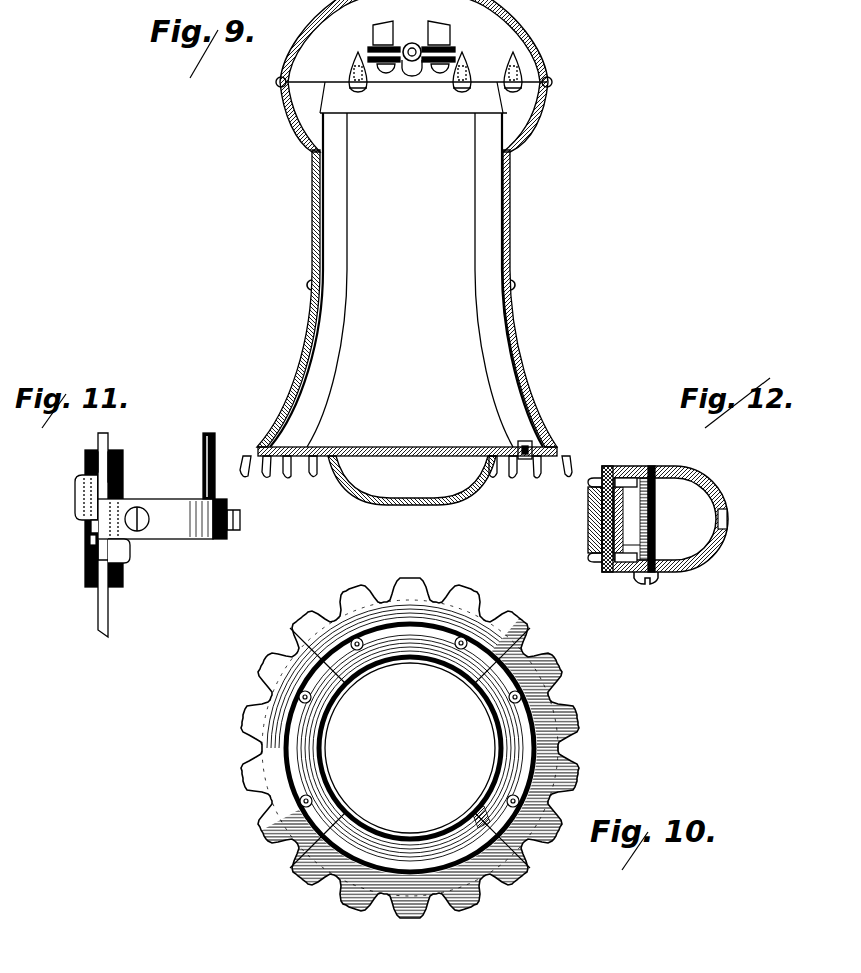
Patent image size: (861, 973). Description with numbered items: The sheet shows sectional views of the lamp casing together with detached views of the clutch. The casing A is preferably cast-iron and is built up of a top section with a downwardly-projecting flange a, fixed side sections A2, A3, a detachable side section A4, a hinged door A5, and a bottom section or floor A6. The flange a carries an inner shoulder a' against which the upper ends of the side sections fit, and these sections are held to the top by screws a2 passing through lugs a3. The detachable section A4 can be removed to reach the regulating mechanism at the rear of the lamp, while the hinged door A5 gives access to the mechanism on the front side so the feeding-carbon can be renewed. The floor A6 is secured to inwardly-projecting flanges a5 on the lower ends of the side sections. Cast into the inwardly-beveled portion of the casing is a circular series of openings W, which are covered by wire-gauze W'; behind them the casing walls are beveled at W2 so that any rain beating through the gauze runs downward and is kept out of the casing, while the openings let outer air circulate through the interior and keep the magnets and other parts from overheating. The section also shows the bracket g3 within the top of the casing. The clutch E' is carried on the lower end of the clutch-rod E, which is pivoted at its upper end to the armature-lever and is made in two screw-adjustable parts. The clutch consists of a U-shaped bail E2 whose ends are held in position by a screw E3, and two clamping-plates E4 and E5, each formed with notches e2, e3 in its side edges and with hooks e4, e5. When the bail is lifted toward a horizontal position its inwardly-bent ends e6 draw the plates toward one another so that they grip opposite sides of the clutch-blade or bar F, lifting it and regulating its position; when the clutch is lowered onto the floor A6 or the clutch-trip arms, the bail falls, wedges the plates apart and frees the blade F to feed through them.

In FIG. 9, the casing A is at (406, 280).
In FIG. 10, the casing A is at (410, 748).
In FIG. 9, the fixed side section A2 is at (410, 280).
In FIG. 10, the fixed side section A2 is at (275, 748).
In FIG. 10, the fixed side section A3 is at (578, 748).
In FIG. 9, the detachable side section A4 is at (530, 298).
In FIG. 10, the detachable side section A4 is at (408, 592).
In FIG. 9, the hinged door A5 is at (288, 298).
In FIG. 10, the hinged door A5 is at (413, 918).
In FIG. 9, the bottom section or floor A6 is at (412, 480).
In FIG. 9, the downwardly-projecting flange a is at (420, 87).
In FIG. 9, the inner shoulder a' is at (428, 69).
In FIG. 9, the screws a2 is at (518, 91).
In FIG. 9, the lugs a3 is at (500, 86).
In FIG. 10, the lugs a3 is at (357, 638).
In FIG. 9, the inwardly-projecting flanges a5 is at (522, 441).
In FIG. 9, the pivot bracket g3 is at (410, 42).
In FIG. 9, the openings W is at (384, 112).
In FIG. 9, the wire-gauze W' is at (414, 76).
In FIG. 9, the beveled walls W2 is at (323, 131).
In FIG. 11, the clutch-rod E is at (216, 466).
In FIG. 11, the clutch E' is at (126, 467).
In FIG. 11, the U-shaped bail E2 is at (169, 519).
In FIG. 12, the U-shaped bail E2 is at (718, 490).
In FIG. 11, the screw E3 is at (145, 530).
In FIG. 12, the screw E3 is at (660, 580).
In FIG. 11, the clamping-plate E4 is at (85, 462).
In FIG. 12, the clamping-plate E4 is at (588, 522).
In FIG. 11, the clamping-plate E5 is at (115, 450).
In FIG. 12, the clamping-plate E5 is at (628, 512).
In FIG. 11, the notch e2 is at (90, 523).
In FIG. 11, the notch e3 is at (126, 566).
In FIG. 12, the notch e3 is at (640, 554).
In FIG. 11, the hook e4 is at (75, 493).
In FIG. 12, the hook e4 is at (592, 482).
In FIG. 11, the hook e5 is at (110, 552).
In FIG. 12, the hook e5 is at (632, 479).
In FIG. 11, the inwardly-bent ends e6 is at (90, 538).
In FIG. 12, the inwardly-bent ends e6 is at (616, 478).
In FIG. 11, the clutch-blade or bar F is at (107, 535).
In FIG. 12, the clutch-blade or bar F is at (602, 538).